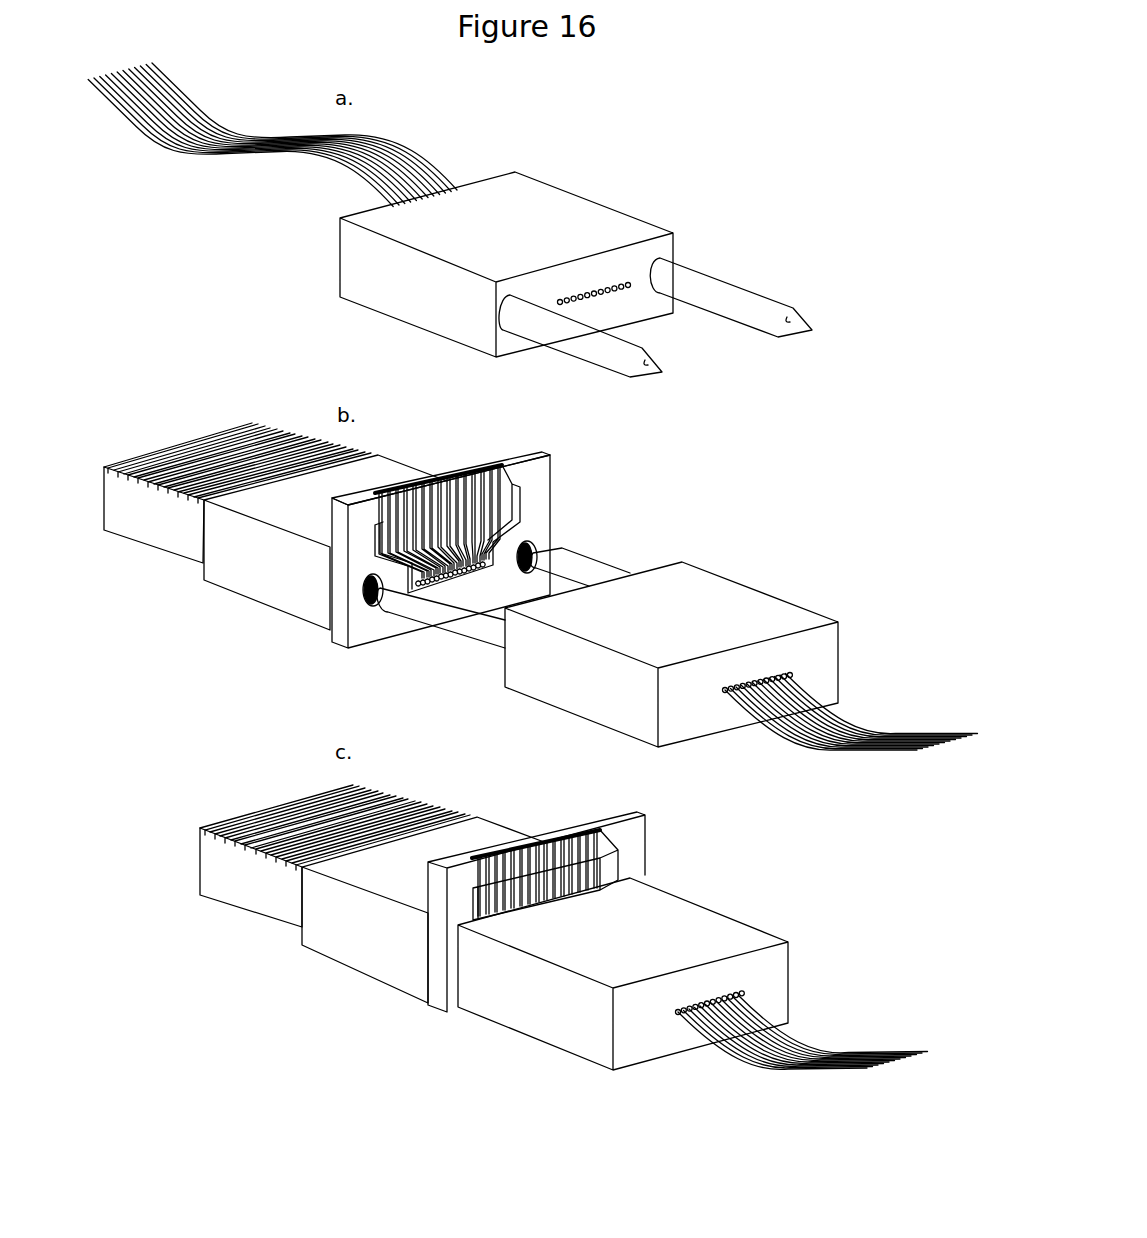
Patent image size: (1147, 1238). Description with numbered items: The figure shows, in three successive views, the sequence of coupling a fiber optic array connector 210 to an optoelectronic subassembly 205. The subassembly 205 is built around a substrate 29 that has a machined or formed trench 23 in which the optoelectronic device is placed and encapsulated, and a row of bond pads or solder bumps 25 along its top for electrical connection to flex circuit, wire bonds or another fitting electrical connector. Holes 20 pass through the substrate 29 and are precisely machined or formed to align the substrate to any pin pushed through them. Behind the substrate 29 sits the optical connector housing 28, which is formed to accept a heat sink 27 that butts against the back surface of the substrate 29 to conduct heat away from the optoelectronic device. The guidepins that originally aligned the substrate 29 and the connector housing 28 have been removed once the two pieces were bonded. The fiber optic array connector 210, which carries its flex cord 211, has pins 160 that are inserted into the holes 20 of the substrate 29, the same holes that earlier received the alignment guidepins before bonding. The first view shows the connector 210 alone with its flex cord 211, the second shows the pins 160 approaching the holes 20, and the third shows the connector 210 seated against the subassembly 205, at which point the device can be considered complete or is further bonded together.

The holes 20 is at (375, 610).
The trench 23 is at (510, 516).
The bond pads or solder bumps 25 is at (456, 472).
The heat sink 27 is at (316, 444).
The optical connector housing 28 is at (258, 572).
The substrate 29 is at (553, 490).
The pins 160 is at (430, 633).
The optoelectronic subassembly 205 is at (515, 439).
The fiber optic array connector 210 is at (600, 203).
The flex cord 211 is at (440, 167).